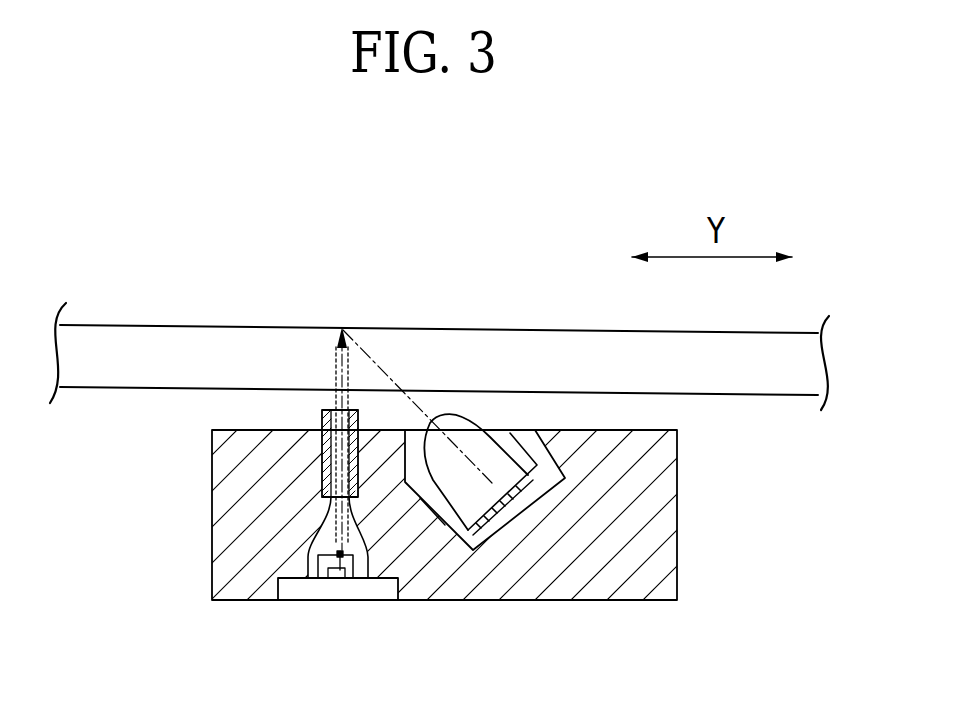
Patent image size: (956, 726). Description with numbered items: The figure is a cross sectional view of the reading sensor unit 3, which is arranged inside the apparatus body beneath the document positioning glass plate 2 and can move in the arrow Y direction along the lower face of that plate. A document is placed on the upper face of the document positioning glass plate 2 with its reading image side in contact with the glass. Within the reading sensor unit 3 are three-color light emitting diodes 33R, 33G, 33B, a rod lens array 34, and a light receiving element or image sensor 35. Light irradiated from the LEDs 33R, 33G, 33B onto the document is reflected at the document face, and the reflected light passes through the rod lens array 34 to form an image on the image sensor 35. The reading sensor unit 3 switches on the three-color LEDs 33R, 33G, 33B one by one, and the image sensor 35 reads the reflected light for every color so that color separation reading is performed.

The document positioning glass plate 2 is at (549, 333).
The reading sensor unit 3 is at (624, 572).
The red light emitting diode 33R is at (497, 517).
The green light emitting diode 33G is at (513, 500).
The blue light emitting diode 33B is at (530, 470).
The rod lens array 34 is at (322, 456).
The light receiving element (image sensor) 35 is at (340, 582).